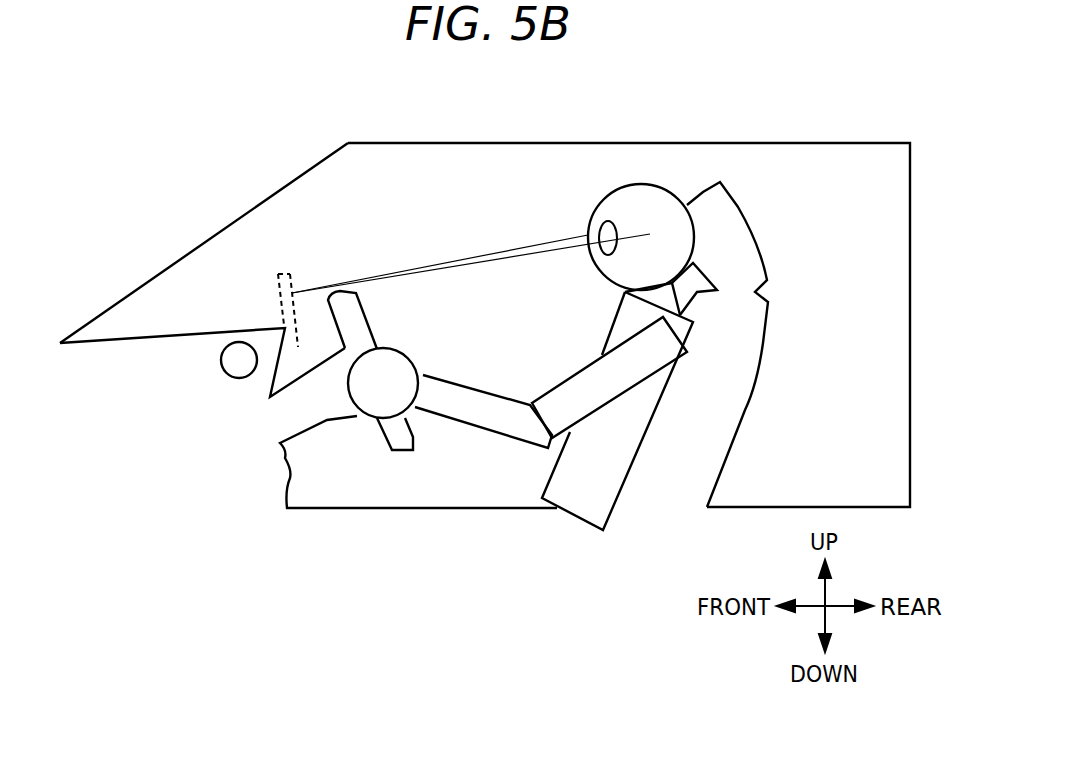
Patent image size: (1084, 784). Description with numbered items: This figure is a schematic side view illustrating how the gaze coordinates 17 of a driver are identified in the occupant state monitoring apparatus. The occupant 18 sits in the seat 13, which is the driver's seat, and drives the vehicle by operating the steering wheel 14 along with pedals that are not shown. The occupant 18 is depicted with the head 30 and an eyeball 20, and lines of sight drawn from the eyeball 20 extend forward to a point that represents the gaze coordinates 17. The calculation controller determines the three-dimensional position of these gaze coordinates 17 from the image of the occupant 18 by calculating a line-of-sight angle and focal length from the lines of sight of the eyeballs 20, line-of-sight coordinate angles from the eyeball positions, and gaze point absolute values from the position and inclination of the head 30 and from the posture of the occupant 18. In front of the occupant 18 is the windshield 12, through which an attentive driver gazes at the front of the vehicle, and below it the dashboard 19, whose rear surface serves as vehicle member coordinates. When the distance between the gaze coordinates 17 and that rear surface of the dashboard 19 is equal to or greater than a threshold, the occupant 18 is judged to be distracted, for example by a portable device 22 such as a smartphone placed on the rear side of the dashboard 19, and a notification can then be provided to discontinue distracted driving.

The windshield 12 is at (190, 250).
The seat 13 is at (711, 180).
The steering wheel 14 is at (343, 292).
The gaze coordinates 17 is at (292, 293).
The occupant 18 is at (671, 193).
The dashboard 19 is at (157, 338).
The eyeballs 20 is at (598, 228).
The portable device 22 is at (280, 275).
The head 30 is at (648, 185).